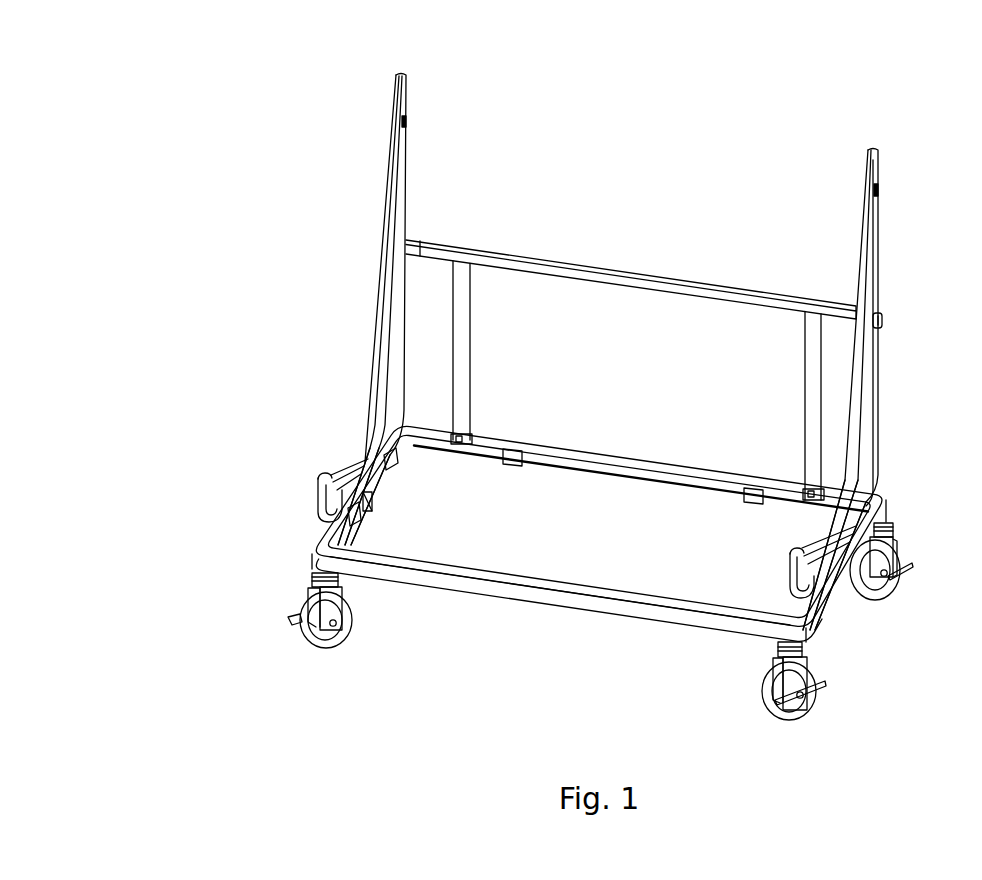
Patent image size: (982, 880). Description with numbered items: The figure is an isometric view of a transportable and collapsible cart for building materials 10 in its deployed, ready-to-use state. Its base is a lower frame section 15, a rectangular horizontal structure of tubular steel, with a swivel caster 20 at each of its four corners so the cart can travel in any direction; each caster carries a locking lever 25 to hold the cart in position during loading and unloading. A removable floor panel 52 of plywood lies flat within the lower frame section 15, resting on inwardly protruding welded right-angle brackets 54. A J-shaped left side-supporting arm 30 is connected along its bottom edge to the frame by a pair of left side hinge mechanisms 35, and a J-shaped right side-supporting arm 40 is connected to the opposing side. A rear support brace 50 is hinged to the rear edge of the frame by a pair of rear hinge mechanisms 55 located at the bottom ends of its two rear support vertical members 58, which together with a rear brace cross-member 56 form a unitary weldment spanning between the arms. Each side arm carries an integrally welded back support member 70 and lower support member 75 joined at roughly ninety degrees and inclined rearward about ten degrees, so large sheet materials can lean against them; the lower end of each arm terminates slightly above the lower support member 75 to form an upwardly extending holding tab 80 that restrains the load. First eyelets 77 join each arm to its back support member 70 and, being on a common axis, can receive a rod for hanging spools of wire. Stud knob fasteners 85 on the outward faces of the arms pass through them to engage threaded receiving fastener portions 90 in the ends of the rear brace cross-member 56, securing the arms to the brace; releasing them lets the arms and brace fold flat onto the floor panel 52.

The transportable and collapsible cart for building materials 10 is at (132, 114).
The lower frame section 15 is at (623, 467).
The swivel caster 20 is at (327, 646).
The locking lever 25 is at (290, 619).
The left side-supporting arm 30 is at (378, 258).
The left side hinge mechanism 35 is at (393, 465).
The right side-supporting arm 40 is at (870, 395).
The rear support brace 50 is at (631, 351).
The floor panel 52 is at (510, 553).
The right-angle bracket 54 is at (520, 452).
The rear hinge mechanism 55 is at (463, 434).
The rear brace cross-member 56 is at (563, 274).
The rear support vertical member 58 is at (462, 296).
The back support member 70 is at (374, 378).
The lower support member 75 is at (358, 467).
The first eyelet 77 is at (405, 122).
The holding tab 80 is at (317, 492).
The stud knob fastener 85 is at (883, 320).
The threaded receiving fastener portion 90 is at (415, 246).